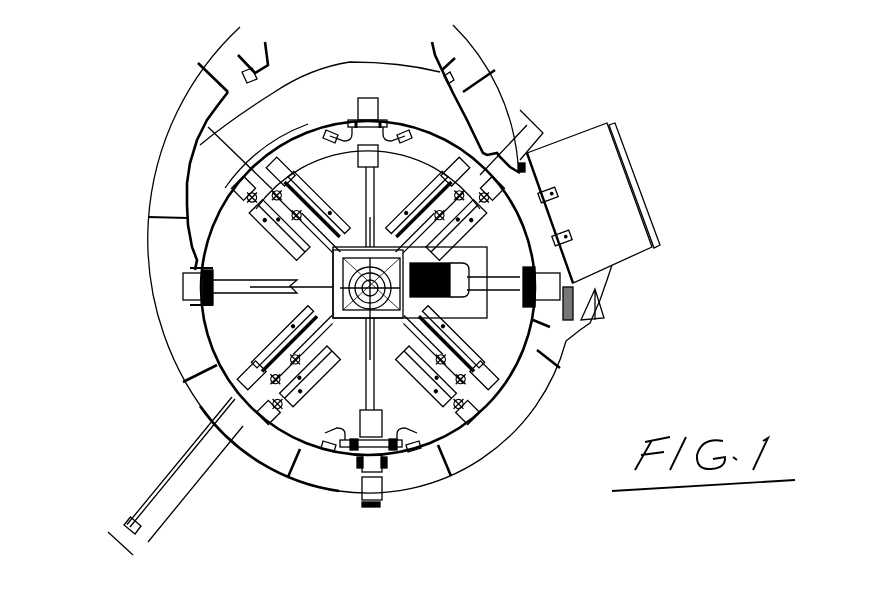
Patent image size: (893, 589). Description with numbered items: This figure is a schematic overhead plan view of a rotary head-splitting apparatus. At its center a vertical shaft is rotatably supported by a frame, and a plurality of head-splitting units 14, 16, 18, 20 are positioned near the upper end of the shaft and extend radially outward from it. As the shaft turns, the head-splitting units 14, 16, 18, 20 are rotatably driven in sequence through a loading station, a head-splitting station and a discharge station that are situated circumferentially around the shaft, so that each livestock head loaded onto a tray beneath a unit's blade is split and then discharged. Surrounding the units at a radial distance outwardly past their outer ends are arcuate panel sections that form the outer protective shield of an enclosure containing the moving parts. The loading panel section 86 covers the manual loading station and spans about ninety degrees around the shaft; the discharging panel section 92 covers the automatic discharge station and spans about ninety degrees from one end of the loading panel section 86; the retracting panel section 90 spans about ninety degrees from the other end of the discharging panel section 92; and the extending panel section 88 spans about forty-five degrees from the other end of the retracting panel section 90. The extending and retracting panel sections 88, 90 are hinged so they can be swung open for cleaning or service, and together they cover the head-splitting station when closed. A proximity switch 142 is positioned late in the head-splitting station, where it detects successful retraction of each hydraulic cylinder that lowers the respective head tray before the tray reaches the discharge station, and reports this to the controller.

The head-splitting unit 14 is at (403, 213).
The head-splitting unit 16 is at (270, 230).
The head-splitting unit 18 is at (252, 363).
The head-splitting unit 20 is at (437, 397).
The proximity switch 142 is at (250, 186).
The loading panel section 86 is at (457, 453).
The extending panel section 88 is at (488, 60).
The retracting panel section 90 is at (153, 153).
The discharging panel section 92 is at (173, 367).